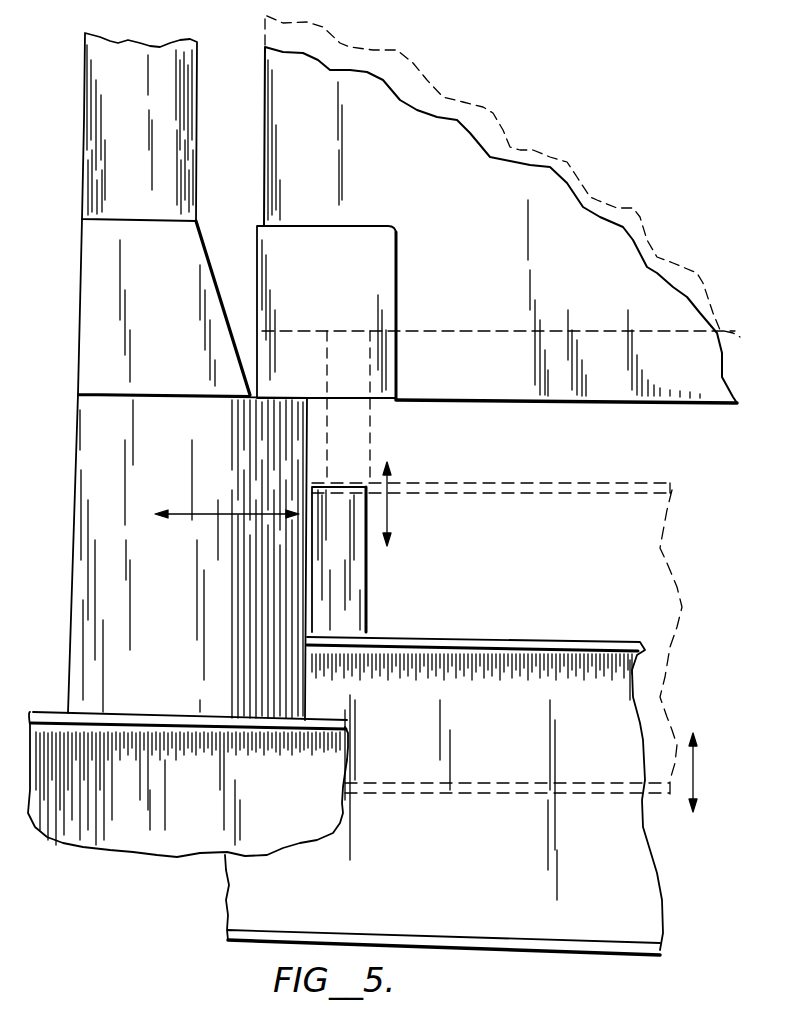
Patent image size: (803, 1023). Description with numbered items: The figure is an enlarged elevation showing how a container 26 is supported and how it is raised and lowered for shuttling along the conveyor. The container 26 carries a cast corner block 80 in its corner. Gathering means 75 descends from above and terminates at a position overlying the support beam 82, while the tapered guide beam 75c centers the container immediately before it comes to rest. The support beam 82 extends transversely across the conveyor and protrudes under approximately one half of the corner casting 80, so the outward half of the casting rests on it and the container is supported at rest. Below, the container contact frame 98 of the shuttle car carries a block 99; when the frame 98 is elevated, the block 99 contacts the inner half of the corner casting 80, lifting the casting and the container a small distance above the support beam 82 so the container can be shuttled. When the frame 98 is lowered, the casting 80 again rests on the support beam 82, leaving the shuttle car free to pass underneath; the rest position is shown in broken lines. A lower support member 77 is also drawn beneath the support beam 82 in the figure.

The gathering means 75 is at (142, 150).
The tapered guide beam 75c is at (195, 284).
The container 26 is at (491, 258).
The cast corner block 80 is at (346, 290).
The support beam 82 is at (193, 611).
The block 99 is at (375, 432).
The support bracket 77 is at (188, 796).
The container contact frame 98 is at (515, 845).